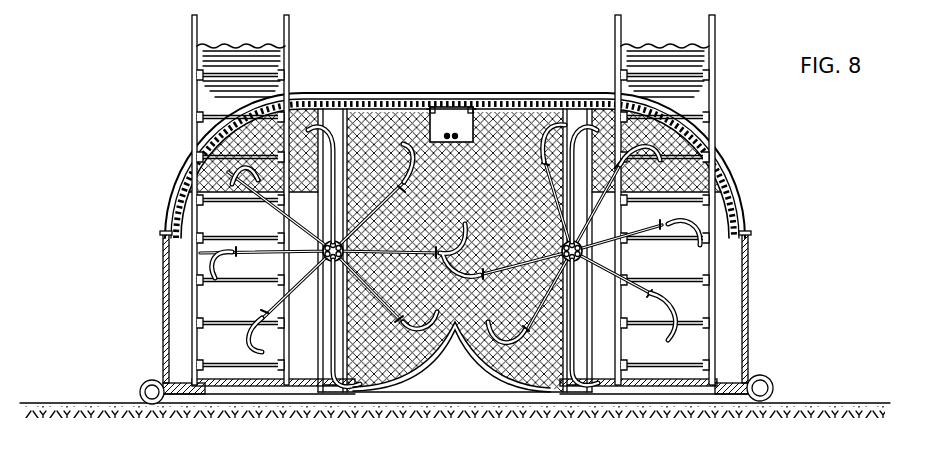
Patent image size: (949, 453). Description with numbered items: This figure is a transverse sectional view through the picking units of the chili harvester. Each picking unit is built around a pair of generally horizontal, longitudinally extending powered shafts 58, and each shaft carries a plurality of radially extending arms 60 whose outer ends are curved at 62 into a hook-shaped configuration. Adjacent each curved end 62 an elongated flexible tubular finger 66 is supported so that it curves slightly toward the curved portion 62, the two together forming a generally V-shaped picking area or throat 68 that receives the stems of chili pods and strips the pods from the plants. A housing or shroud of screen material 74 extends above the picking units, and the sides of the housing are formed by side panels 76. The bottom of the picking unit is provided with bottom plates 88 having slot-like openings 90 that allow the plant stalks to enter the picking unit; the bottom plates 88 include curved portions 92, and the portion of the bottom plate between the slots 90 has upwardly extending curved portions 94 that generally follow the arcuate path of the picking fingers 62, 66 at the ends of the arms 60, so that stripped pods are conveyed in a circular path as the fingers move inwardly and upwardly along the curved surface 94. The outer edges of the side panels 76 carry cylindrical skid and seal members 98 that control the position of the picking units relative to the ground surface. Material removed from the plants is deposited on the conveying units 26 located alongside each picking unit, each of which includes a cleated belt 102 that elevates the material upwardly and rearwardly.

The conveying unit 26 is at (193, 48).
The cleated belt 102 is at (205, 60).
The screen material 74 is at (490, 128).
The radially extending arm 60 is at (258, 318).
The picking throat 68 is at (203, 254).
The powered shaft 58 is at (320, 256).
The side panel 76 is at (163, 325).
The bottom plate 88 is at (198, 386).
The curved portion 92 is at (318, 368).
The upwardly extending curved portion 94 is at (404, 329).
The curved end 62 is at (497, 327).
The slot-like opening 90 is at (343, 393).
The flexible tubular finger 66 is at (682, 305).
The cylindrical skid and seal member 98 is at (772, 383).